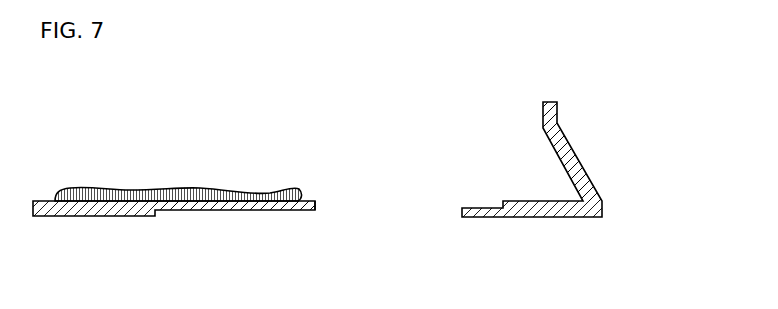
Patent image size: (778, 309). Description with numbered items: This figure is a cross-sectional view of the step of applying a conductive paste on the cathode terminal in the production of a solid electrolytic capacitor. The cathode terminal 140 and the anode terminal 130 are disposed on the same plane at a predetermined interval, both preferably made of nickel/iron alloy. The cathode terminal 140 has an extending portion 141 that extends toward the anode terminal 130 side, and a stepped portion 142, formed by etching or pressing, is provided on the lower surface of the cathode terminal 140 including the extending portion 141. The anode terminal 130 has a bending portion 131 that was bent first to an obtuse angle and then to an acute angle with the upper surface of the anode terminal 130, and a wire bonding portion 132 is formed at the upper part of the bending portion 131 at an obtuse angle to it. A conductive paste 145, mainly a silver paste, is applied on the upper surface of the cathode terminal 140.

The anode terminal 130 is at (550, 213).
The bending portion 131 is at (573, 155).
The wire bonding portion 132 is at (558, 108).
The cathode terminal 140 is at (72, 216).
The extending portion 141 is at (290, 210).
The stepped portion 142 is at (162, 210).
The conductive paste 145 is at (227, 193).